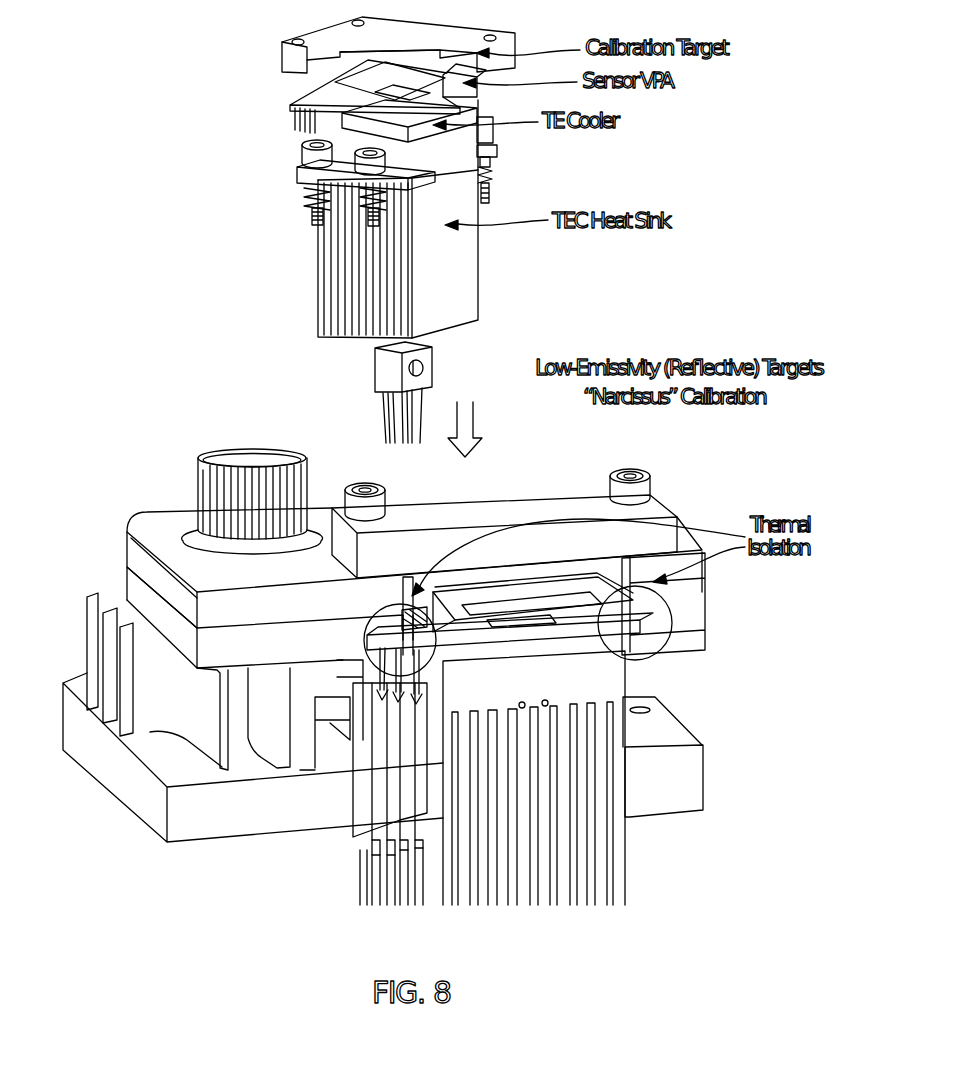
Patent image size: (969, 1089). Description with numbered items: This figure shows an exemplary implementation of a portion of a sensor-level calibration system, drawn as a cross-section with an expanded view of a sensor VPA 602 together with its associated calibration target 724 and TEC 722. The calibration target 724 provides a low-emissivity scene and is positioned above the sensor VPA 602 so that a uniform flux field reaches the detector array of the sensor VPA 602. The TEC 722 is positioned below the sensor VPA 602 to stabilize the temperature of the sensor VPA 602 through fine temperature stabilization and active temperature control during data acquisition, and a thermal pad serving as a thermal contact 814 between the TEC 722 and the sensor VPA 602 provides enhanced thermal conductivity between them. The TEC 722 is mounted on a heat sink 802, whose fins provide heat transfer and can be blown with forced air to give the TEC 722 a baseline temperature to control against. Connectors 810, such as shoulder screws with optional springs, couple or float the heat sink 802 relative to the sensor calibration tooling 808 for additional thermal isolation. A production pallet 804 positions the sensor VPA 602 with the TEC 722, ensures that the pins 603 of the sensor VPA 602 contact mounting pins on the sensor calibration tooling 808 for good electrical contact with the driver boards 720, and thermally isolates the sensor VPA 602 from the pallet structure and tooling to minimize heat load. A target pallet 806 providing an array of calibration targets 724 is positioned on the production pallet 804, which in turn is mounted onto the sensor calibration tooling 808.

The calibration target 724 is at (282, 45).
The sensor VPA 602 is at (282, 97).
The pins 603 is at (293, 110).
The TEC 722 is at (340, 128).
The connectors 810 is at (272, 177).
The heat sink 802 is at (318, 276).
The target pallet 806 is at (127, 532).
The production pallet 804 is at (113, 585).
The sensor calibration tooling 808 is at (62, 730).
The thermal contact 814 is at (577, 648).
The driver boards 720 is at (360, 856).